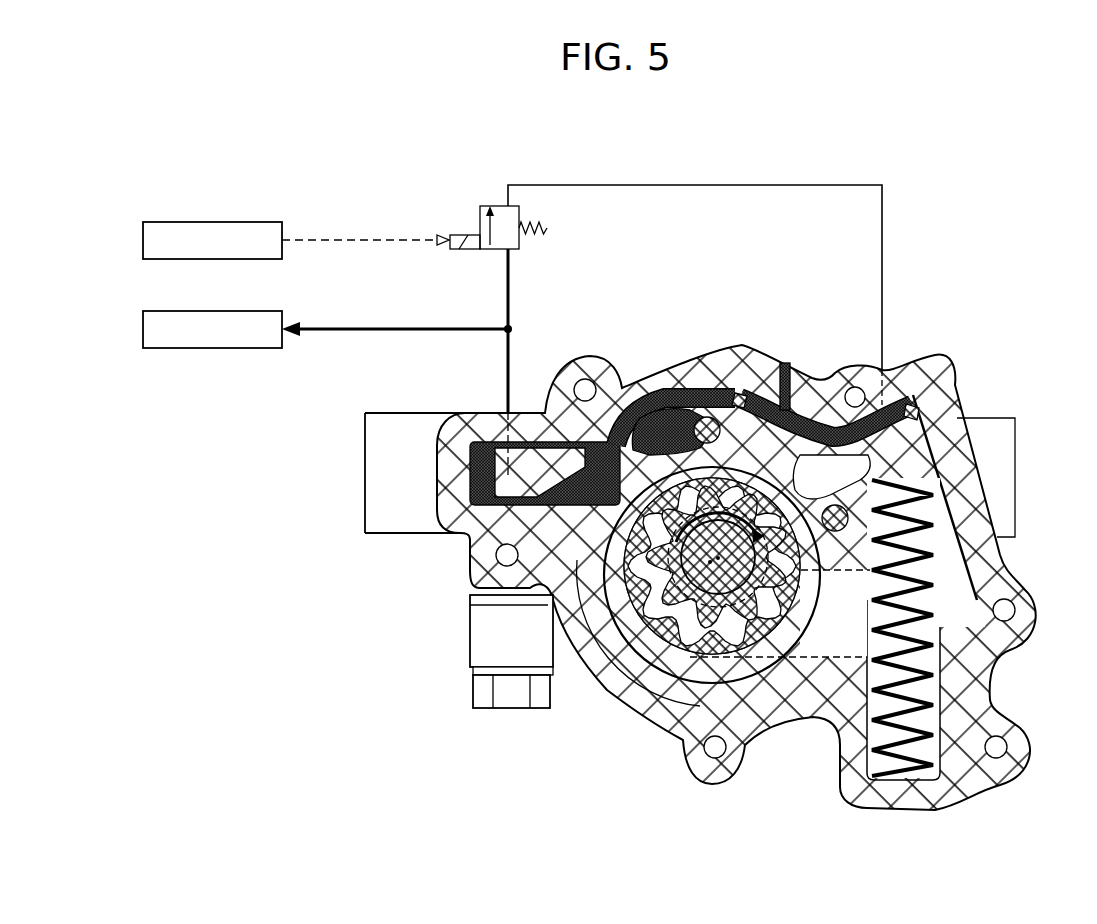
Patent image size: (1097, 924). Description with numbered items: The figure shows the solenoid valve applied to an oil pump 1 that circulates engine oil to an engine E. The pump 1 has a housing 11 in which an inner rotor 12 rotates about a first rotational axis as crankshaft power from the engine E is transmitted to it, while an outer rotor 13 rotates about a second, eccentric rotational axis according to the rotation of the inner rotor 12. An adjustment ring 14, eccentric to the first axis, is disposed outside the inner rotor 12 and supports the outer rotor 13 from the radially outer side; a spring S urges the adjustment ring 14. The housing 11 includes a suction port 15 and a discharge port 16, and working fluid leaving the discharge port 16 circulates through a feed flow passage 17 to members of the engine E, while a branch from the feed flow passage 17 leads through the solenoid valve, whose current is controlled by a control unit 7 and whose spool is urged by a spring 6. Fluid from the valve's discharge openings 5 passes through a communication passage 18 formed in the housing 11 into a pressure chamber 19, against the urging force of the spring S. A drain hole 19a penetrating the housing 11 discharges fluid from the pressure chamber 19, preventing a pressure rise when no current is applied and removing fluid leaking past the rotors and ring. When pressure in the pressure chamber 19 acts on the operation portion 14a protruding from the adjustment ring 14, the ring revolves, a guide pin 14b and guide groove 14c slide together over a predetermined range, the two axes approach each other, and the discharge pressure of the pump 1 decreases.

The oil pump 1 is at (940, 368).
The discharge openings 5 is at (500, 206).
The spring 6 is at (548, 232).
The control unit 7 is at (175, 222).
The housing 11 is at (440, 440).
The inner rotor 12 is at (690, 655).
The outer rotor 13 is at (613, 567).
The adjustment ring 14 is at (617, 633).
The operation portion 14a is at (910, 455).
The guide pin 14b is at (692, 408).
The guide groove 14c is at (645, 428).
The suction port 15 is at (818, 645).
The discharge port 16 is at (498, 482).
The feed flow passage 17 is at (400, 332).
The communication passage 18 is at (882, 222).
The pressure chamber 19 is at (862, 403).
The drain hole 19a is at (763, 362).
The spring S is at (933, 633).
The engine E is at (192, 311).